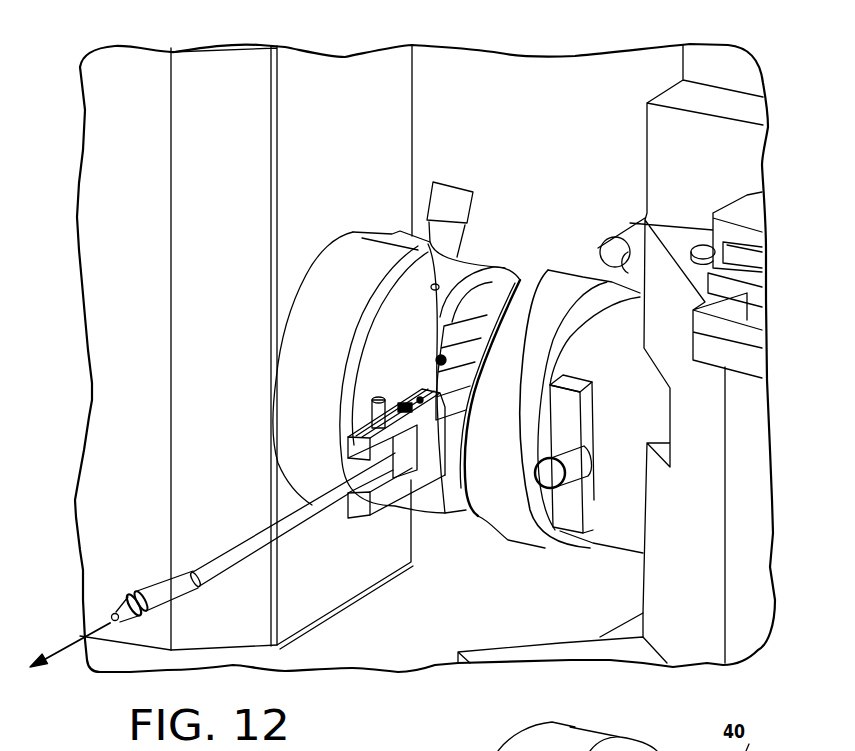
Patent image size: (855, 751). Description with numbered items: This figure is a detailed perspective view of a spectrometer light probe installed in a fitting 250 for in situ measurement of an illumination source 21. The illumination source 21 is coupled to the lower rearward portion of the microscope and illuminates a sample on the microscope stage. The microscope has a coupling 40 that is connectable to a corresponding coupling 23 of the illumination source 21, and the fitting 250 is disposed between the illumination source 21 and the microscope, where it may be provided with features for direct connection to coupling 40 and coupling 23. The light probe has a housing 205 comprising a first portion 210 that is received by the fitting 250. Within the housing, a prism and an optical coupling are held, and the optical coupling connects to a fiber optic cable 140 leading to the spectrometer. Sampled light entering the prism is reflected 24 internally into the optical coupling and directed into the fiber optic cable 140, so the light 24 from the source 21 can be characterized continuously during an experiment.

The illumination source 21 is at (255, 77).
The coupling 23 is at (413, 303).
The fitting 250 is at (493, 308).
The coupling 40 is at (568, 287).
The fiber optic cable 140 is at (226, 543).
The reflected light 24 is at (63, 647).
The first portion 210 is at (415, 485).
The housing 205 is at (468, 527).